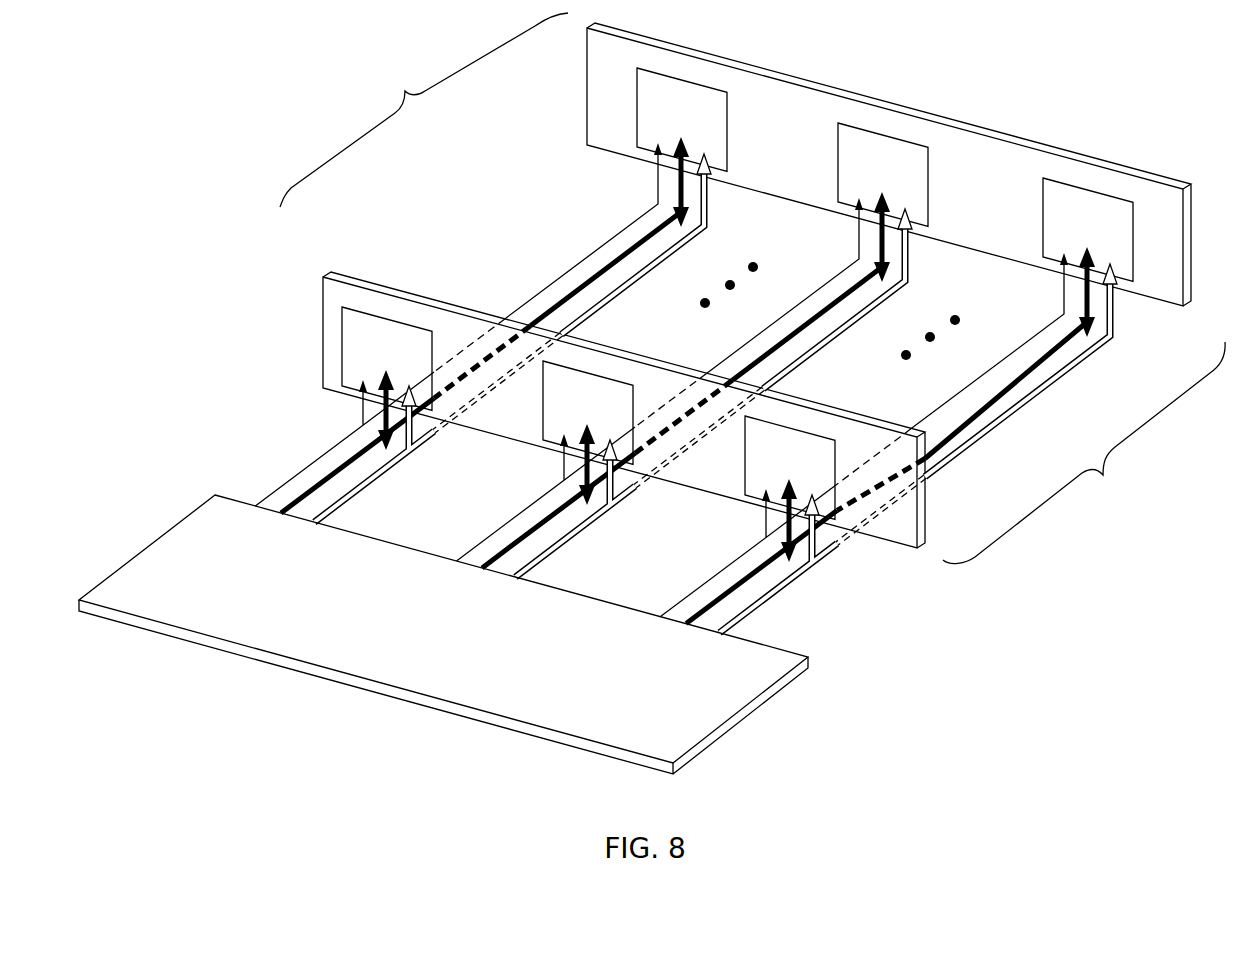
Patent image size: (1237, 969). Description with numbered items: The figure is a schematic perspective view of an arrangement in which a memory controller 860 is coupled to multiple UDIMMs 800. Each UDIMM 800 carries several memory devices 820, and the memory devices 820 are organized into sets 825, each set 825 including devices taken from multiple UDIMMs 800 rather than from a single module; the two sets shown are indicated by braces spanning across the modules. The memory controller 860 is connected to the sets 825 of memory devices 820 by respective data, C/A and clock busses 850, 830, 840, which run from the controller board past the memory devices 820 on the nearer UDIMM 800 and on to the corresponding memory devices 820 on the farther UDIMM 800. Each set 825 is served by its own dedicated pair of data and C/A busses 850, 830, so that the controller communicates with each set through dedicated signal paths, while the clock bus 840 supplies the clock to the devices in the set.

The UDIMM 800 is at (1146, 142).
The memory device 820 is at (655, 71).
The set of memory devices 825 is at (752, 288).
The C/A bus 830 is at (792, 584).
The clock bus 840 is at (753, 547).
The data bus 850 is at (743, 581).
The memory controller 860 is at (743, 722).